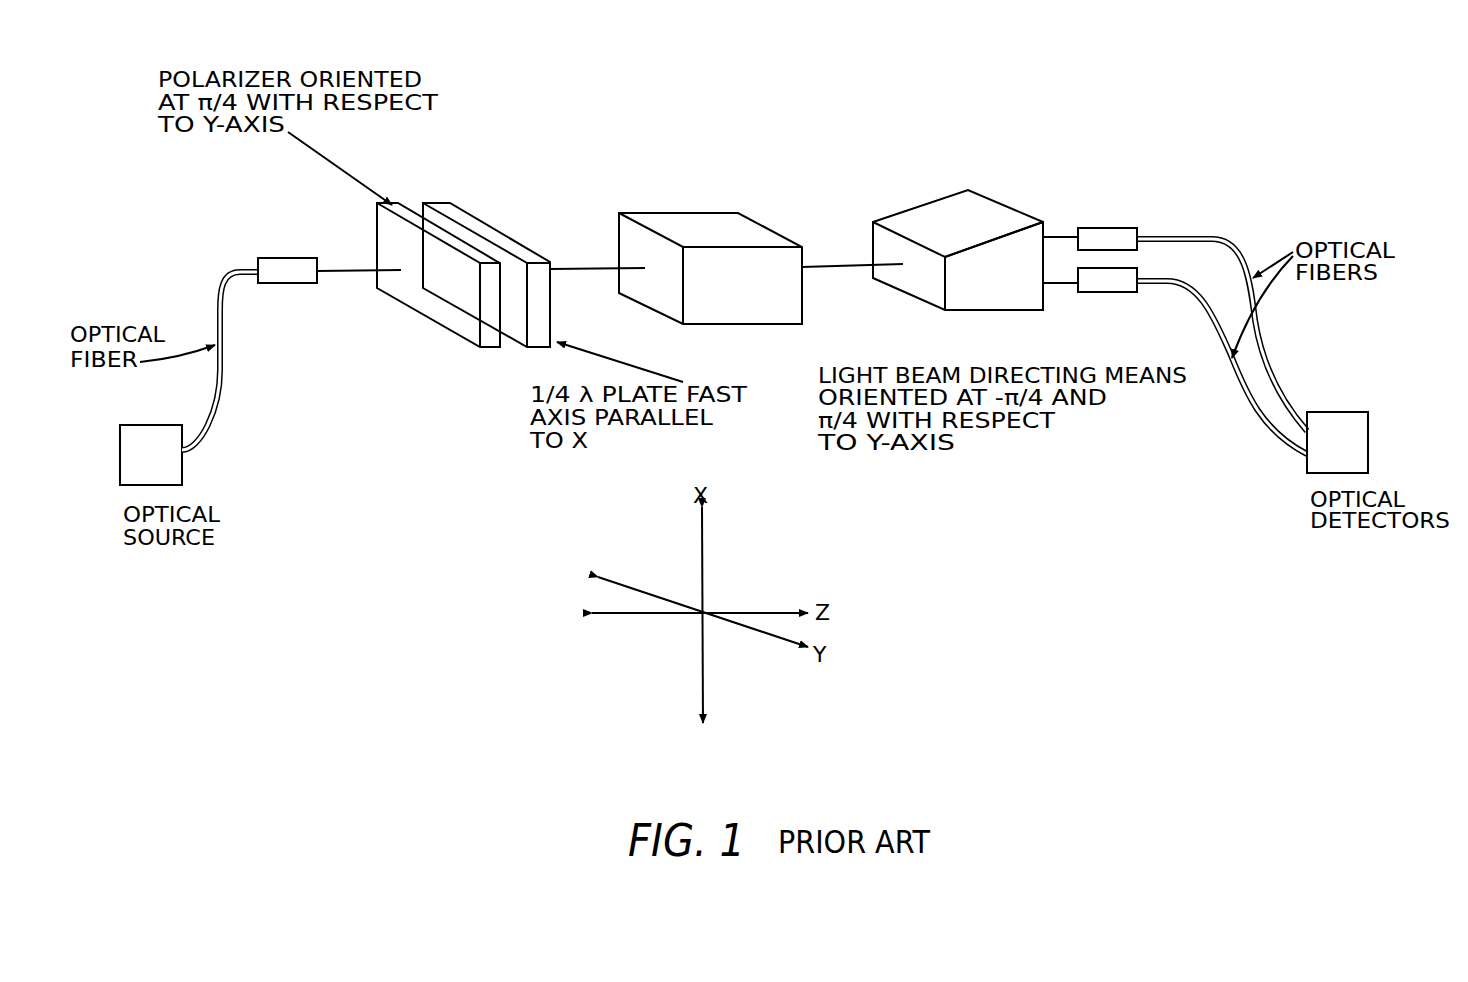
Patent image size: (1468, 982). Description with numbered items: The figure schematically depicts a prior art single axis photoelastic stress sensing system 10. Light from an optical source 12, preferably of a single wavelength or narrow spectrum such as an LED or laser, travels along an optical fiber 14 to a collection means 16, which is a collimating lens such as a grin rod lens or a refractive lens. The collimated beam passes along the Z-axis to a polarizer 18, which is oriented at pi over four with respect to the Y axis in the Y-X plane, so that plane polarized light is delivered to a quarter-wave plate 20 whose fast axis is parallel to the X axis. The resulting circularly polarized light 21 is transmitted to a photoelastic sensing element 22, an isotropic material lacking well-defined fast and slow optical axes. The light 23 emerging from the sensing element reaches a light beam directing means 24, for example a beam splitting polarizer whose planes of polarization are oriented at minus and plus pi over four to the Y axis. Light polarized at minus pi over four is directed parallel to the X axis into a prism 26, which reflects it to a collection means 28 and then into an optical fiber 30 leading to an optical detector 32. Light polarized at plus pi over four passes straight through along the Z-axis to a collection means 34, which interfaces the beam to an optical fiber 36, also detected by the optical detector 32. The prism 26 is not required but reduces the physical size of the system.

The stress sensing system 10 is at (377, 615).
The optical source 12 is at (182, 462).
The optical fiber 14 is at (224, 365).
The collection means 16 is at (295, 283).
The polarizer 18 is at (425, 317).
The quarter-wave plate 20 is at (486, 220).
The light 21 is at (592, 247).
The photoelastic sensing element 22 is at (762, 225).
The light 23 is at (835, 266).
The light beam directing means 24 is at (910, 293).
The prism 26 is at (997, 203).
The collection means 28 is at (1110, 228).
The optical fiber 30 is at (1267, 375).
The optical detector 32 is at (1370, 428).
The collection means 34 is at (1138, 275).
The optical fiber 36 is at (1240, 408).